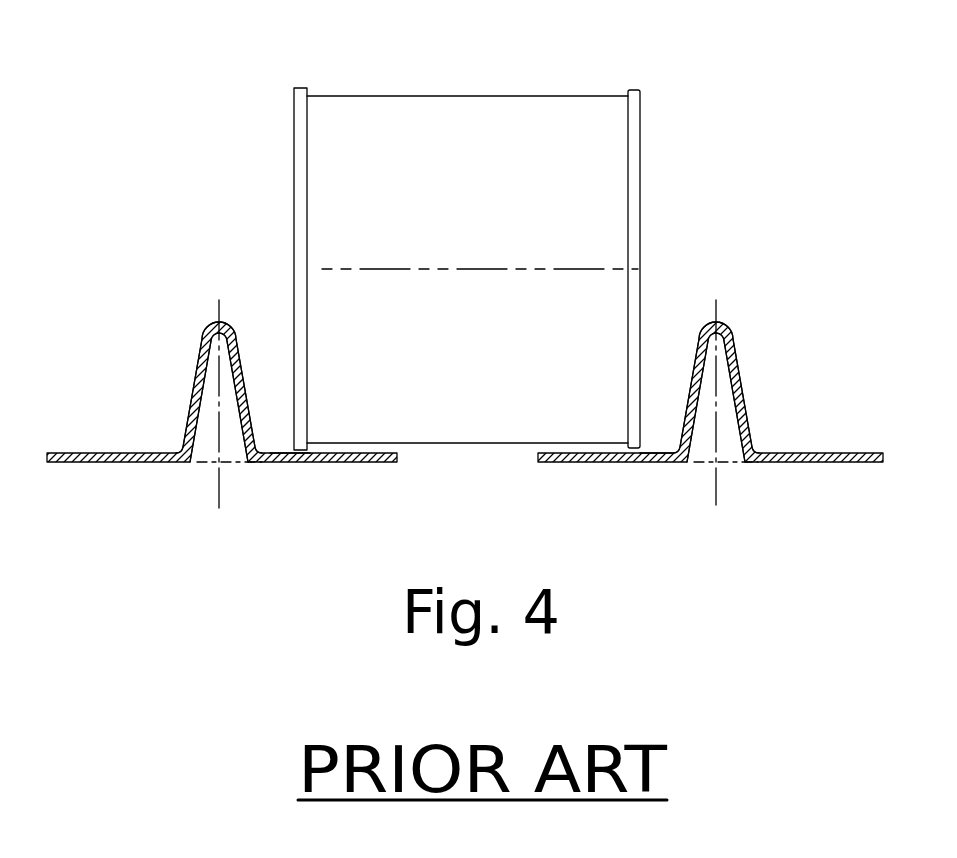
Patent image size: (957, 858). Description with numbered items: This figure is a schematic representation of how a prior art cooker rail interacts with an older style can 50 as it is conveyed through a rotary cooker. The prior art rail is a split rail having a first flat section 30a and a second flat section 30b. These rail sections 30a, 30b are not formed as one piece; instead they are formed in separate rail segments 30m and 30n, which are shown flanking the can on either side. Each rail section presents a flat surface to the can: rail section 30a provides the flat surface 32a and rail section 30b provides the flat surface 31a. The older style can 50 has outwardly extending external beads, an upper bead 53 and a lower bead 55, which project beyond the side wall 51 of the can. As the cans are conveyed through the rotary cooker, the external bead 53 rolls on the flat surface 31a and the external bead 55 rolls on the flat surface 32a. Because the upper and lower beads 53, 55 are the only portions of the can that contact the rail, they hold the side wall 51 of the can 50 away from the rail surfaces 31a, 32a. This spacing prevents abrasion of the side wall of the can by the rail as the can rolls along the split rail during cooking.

The older style can 50 is at (507, 233).
The side wall 51 is at (423, 98).
The external bead 55 is at (302, 88).
The external bead 53 is at (633, 90).
The first flat section 30a is at (285, 401).
The second flat section 30b is at (647, 398).
The rail segment 30m is at (209, 320).
The rail segment 30n is at (738, 324).
The flat surface 32a is at (288, 450).
The flat surface 31a is at (650, 450).